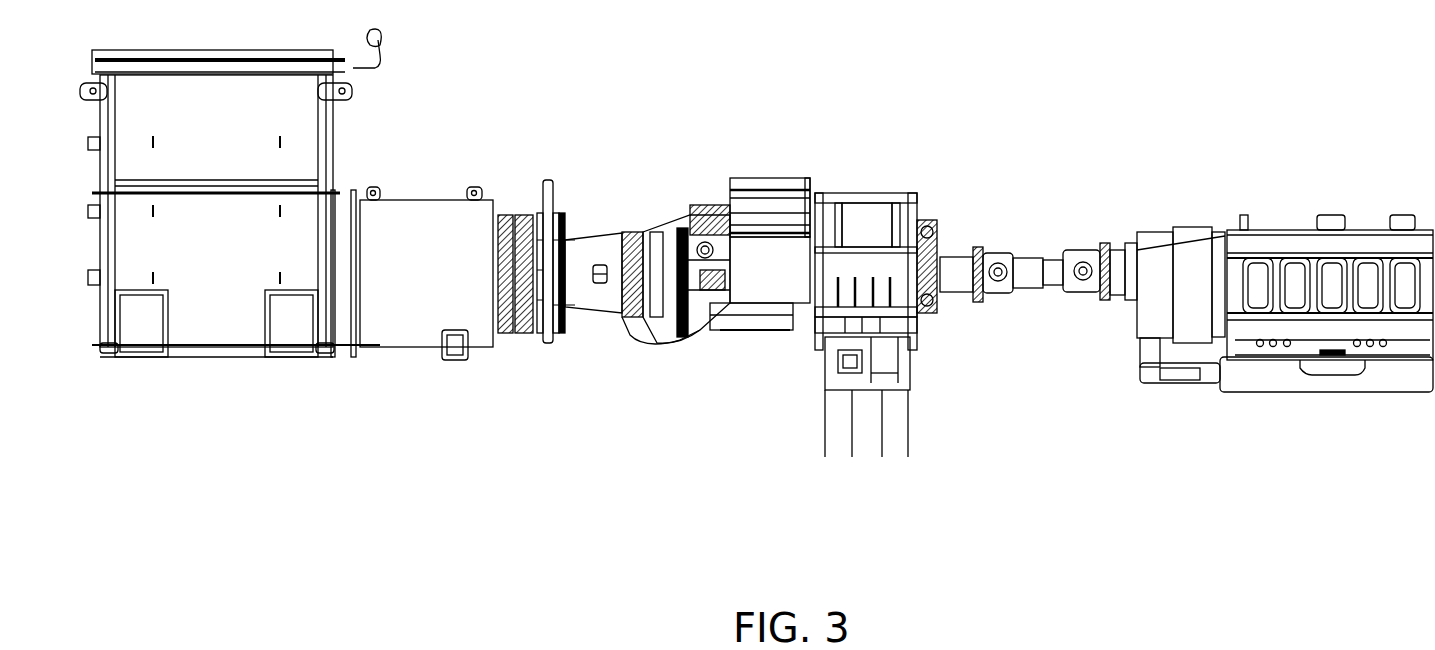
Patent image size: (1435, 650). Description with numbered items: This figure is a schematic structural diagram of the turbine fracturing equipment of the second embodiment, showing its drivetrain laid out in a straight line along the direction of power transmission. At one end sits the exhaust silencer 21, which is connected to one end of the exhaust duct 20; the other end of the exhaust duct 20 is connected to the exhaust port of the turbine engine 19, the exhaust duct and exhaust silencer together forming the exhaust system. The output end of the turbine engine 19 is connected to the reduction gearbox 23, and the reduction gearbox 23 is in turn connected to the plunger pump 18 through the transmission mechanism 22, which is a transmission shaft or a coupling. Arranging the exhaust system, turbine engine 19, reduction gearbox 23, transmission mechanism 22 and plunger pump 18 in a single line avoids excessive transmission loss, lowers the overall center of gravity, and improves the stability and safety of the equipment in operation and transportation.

The plunger pump 18 is at (1303, 322).
The turbine engine 19 is at (751, 287).
The exhaust duct 20 is at (426, 300).
The exhaust silencer 21 is at (211, 303).
The transmission mechanism 22 is at (1046, 300).
The reduction gearbox 23 is at (845, 290).